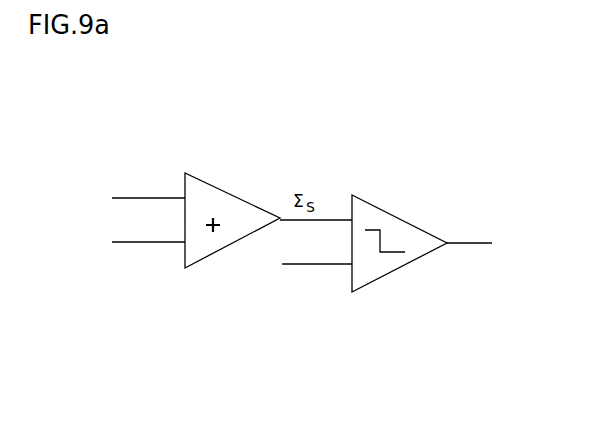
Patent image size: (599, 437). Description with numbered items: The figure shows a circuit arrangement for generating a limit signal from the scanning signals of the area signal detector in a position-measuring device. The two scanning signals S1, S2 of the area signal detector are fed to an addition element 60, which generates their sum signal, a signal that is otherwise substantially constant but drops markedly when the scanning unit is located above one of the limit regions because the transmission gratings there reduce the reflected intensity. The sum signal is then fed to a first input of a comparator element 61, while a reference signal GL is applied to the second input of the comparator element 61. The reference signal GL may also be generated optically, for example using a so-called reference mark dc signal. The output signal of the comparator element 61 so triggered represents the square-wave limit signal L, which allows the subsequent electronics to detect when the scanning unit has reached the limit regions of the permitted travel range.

The addition element 60 is at (241, 209).
The comparator element 61 is at (387, 225).
The scanning signal S1 is at (136, 196).
The scanning signal S2 is at (136, 239).
The reference signal GL is at (302, 264).
The square-wave limit signal L is at (469, 223).